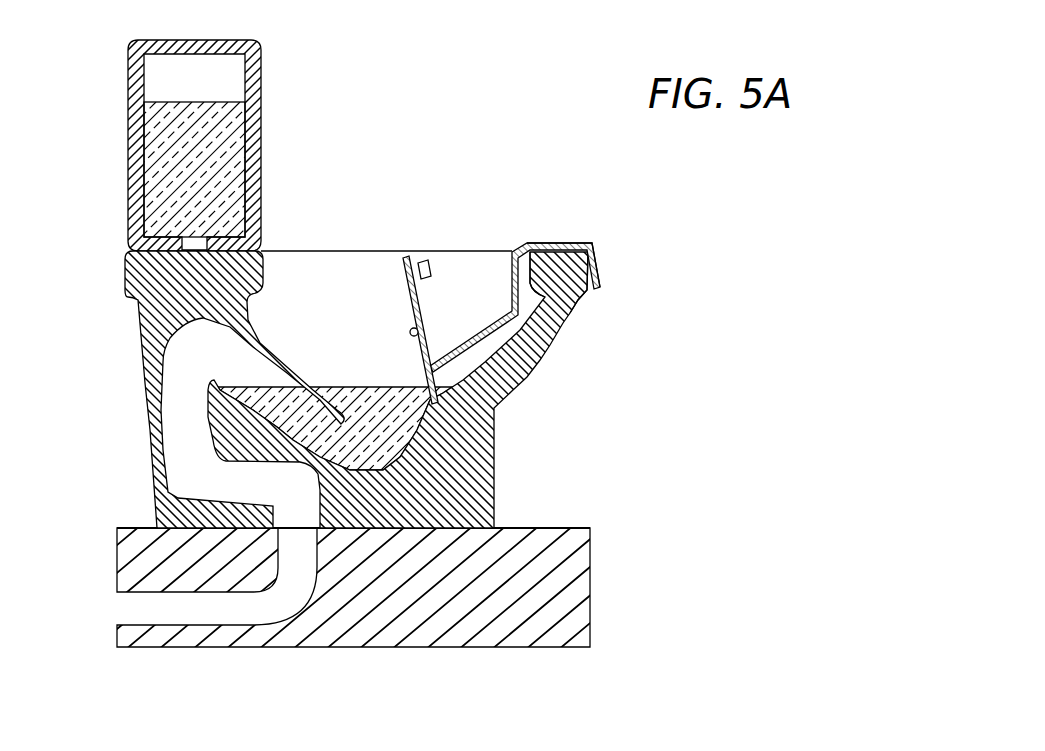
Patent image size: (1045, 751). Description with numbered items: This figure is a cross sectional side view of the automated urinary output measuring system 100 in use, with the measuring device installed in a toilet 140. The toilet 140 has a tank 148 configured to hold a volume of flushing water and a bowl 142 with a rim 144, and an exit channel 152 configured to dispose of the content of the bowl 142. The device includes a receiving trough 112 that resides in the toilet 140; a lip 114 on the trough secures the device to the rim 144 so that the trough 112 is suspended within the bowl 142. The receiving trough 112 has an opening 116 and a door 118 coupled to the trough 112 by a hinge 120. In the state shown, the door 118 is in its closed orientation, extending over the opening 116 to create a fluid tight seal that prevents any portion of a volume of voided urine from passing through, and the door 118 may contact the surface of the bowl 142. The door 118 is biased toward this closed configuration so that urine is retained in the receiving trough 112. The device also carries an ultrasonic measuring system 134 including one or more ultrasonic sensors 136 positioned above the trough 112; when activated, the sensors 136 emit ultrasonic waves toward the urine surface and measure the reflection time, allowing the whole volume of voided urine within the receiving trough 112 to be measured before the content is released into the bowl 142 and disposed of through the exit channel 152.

The automated urinary output measuring system 100 is at (424, 100).
The receiving trough 112 is at (491, 252).
The lip 114 is at (590, 262).
The opening 116 is at (445, 338).
The door 118 is at (420, 360).
The hinge 120 is at (411, 328).
The ultrasonic measuring system 134 is at (455, 228).
The ultrasonic sensors 136 is at (420, 258).
The toilet 140 is at (483, 468).
The bowl 142 is at (310, 225).
The rim 144 is at (568, 280).
The tank 148 is at (163, 172).
The exit channel 152 is at (345, 437).